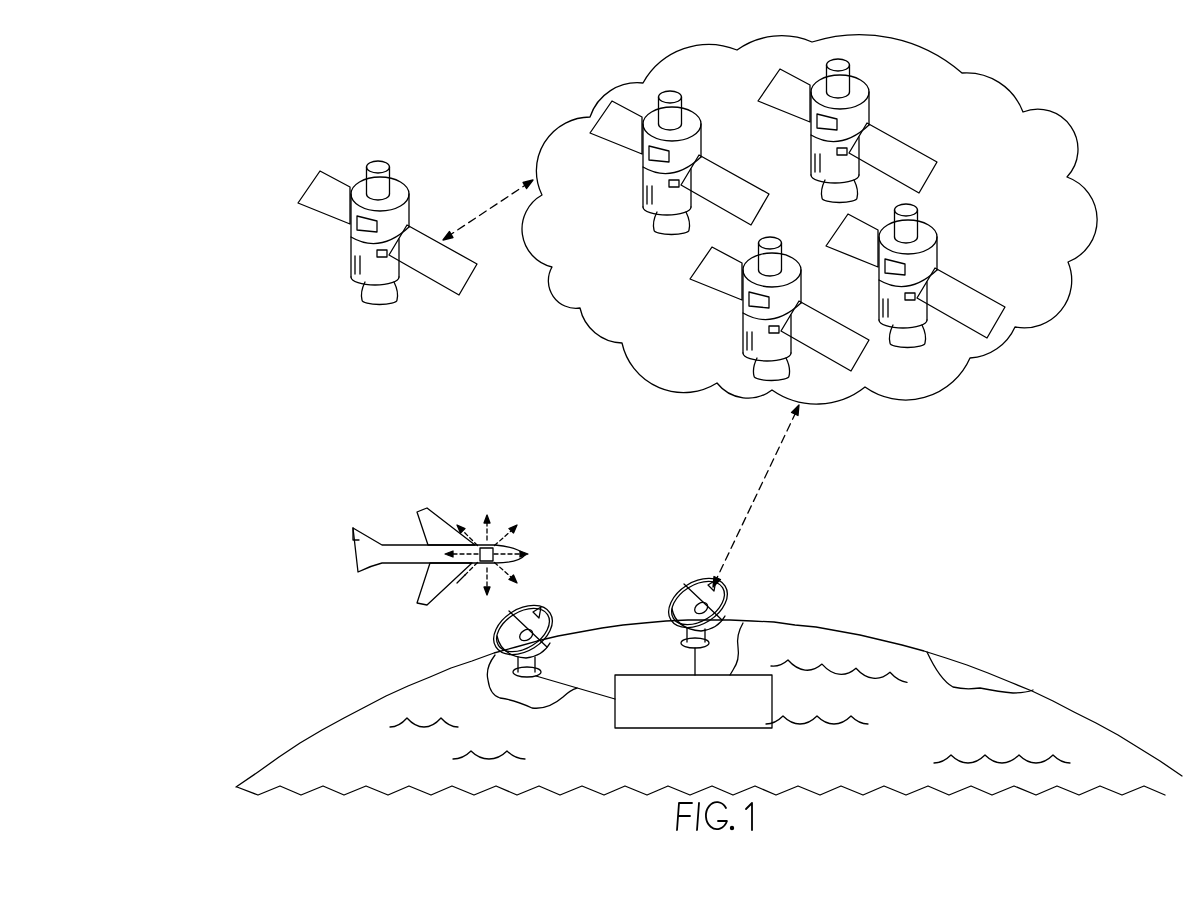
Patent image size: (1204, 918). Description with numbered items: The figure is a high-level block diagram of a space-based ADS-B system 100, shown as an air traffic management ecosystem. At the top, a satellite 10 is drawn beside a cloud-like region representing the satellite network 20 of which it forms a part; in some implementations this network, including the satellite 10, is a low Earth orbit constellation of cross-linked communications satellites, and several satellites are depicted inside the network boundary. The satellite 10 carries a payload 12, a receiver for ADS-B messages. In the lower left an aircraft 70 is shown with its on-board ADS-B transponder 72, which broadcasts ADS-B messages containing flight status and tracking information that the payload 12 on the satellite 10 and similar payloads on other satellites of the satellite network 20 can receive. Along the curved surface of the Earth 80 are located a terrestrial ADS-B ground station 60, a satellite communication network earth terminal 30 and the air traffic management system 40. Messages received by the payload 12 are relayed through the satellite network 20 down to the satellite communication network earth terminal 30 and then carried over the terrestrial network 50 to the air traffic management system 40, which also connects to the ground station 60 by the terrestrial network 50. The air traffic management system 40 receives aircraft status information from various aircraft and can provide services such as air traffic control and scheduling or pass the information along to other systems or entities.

The space-based ADS-B system 100 is at (228, 130).
The satellite 10 is at (306, 188).
The payload 12 is at (364, 170).
The satellite network 20 is at (1045, 110).
The satellite communication network earth terminal 30 is at (725, 607).
The air traffic management system 40 is at (698, 730).
The terrestrial network 50 is at (694, 663).
The terrestrial ADS-B ground station 60 is at (552, 645).
The aircraft 70 is at (395, 543).
The on-board ADS-B transponder 72 is at (492, 542).
The Earth 80 is at (912, 650).